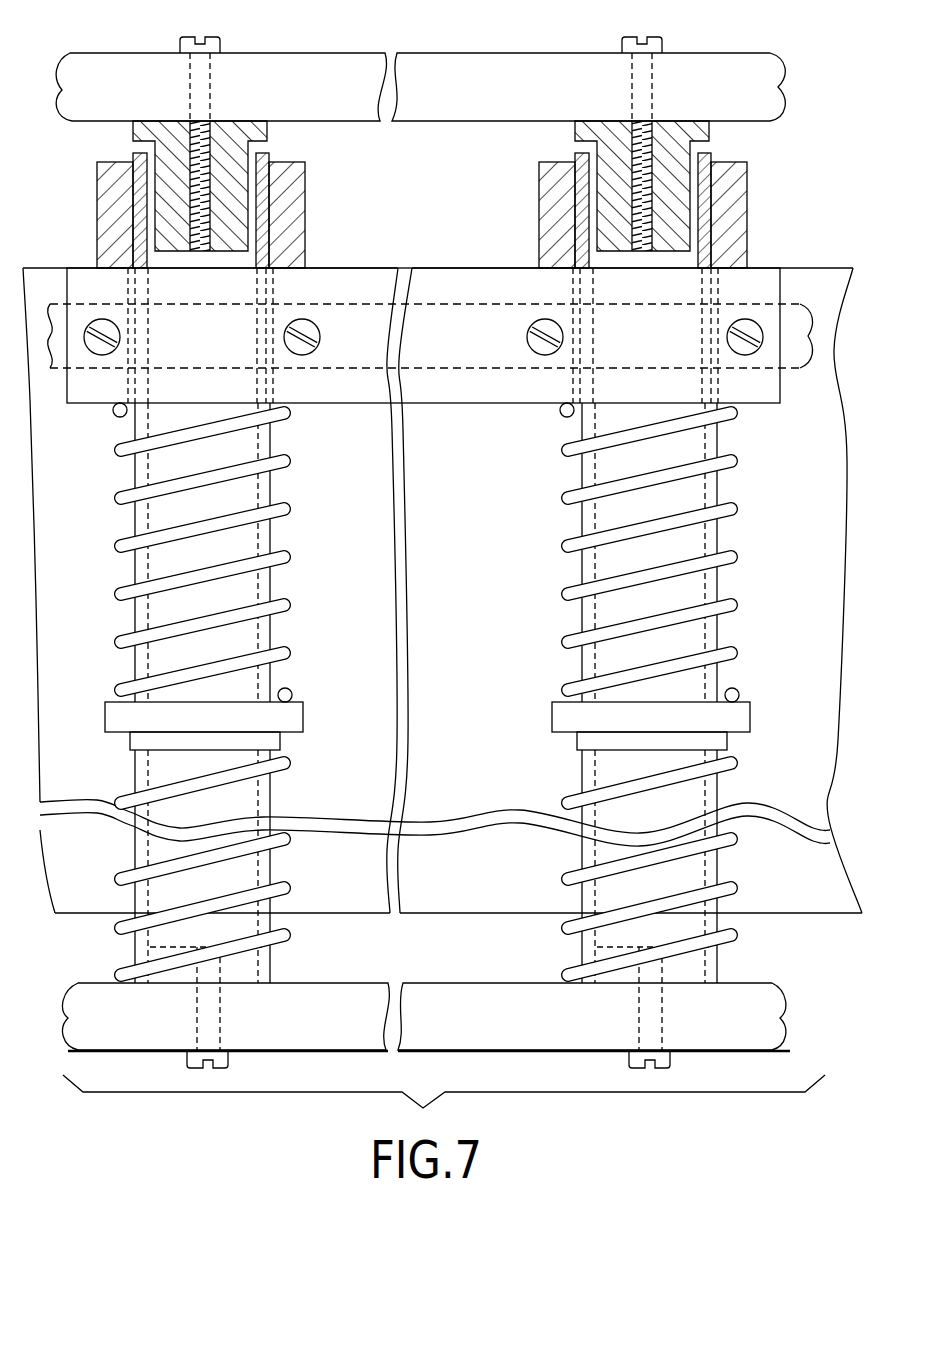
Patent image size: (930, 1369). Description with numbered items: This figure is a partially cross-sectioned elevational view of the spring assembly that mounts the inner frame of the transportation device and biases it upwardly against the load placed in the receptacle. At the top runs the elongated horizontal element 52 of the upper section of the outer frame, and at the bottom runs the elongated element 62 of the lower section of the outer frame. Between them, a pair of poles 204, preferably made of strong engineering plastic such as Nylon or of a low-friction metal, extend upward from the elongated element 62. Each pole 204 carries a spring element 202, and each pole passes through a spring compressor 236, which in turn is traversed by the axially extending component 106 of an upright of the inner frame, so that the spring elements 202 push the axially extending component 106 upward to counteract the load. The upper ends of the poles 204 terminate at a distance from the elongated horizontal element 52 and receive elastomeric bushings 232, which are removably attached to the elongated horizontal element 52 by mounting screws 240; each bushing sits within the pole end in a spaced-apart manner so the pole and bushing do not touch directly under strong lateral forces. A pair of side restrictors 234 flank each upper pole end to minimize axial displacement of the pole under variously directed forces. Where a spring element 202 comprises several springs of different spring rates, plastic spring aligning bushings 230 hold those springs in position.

The elongated horizontal element 52 is at (465, 75).
The elongated element 62 is at (315, 1008).
The axially extending component 106 is at (397, 333).
The spring element 202 is at (667, 643).
The pole 204 is at (218, 645).
The spring aligning bushing 230 is at (670, 725).
The elastomeric bushing 232 is at (227, 140).
The side restrictor 234 is at (730, 197).
The spring compressor 236 is at (330, 288).
The mounting screw 240 is at (202, 80).